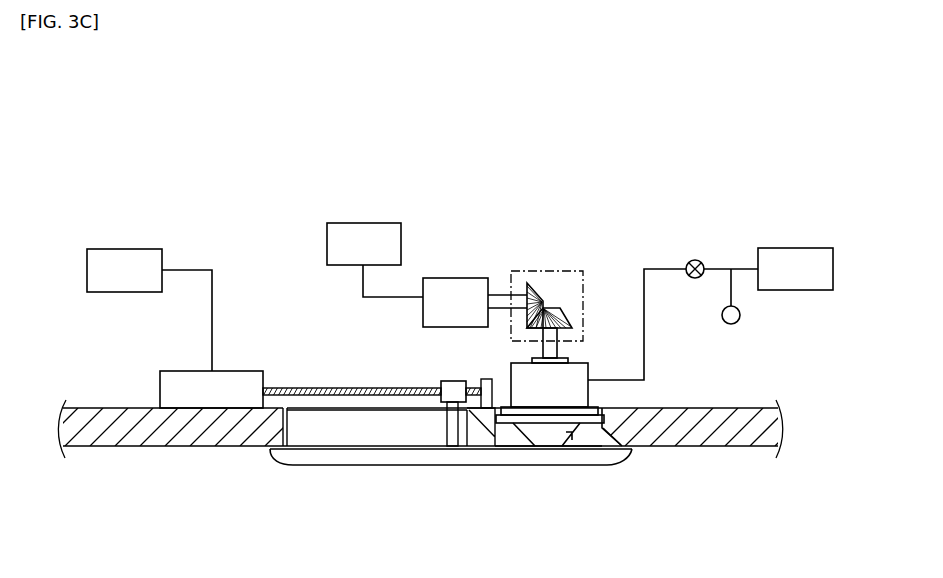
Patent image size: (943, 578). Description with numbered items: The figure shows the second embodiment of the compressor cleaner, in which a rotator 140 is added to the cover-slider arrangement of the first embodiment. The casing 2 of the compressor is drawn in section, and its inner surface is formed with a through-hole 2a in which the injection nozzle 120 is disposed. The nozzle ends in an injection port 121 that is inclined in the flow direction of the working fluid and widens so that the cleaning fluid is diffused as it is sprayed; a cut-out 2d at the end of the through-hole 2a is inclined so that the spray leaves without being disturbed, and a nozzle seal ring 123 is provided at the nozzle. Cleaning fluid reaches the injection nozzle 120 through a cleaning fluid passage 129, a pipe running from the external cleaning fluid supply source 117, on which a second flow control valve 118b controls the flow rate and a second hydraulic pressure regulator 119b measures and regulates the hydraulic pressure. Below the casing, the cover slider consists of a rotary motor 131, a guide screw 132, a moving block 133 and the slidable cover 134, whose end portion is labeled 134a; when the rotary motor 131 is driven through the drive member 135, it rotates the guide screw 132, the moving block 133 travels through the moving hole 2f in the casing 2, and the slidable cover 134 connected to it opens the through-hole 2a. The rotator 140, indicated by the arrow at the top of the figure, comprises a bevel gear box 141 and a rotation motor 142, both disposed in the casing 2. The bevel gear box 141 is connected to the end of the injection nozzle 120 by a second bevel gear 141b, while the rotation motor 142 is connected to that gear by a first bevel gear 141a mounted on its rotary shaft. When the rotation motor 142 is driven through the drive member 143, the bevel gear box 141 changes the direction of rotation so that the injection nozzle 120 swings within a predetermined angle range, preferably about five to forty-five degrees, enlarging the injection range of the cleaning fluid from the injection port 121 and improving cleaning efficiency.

The casing 2 is at (154, 432).
The moving hole 2f is at (290, 432).
The through-hole 2a is at (590, 433).
The cut-out 2d is at (606, 438).
The external cleaning fluid supply source 117 is at (797, 248).
The second flow control valve 118b is at (697, 260).
The second hydraulic pressure regulator 119b is at (740, 315).
The injection nozzle 120 is at (576, 372).
The injection port 121 is at (572, 437).
The nozzle seal ring 123 is at (505, 424).
The cleaning fluid passage 129 is at (663, 268).
The rotary motor 131 is at (240, 371).
The guide screw 132 is at (317, 388).
The moving block 133 is at (441, 383).
The slidable cover 134 is at (367, 458).
The tray end 134a is at (282, 458).
The drive member 135 is at (126, 249).
The rotator 140 is at (492, 212).
The bevel gear box 141 is at (545, 271).
The first bevel gear 141a is at (538, 293).
The second bevel gear 141b is at (565, 315).
The rotation motor 142 is at (455, 278).
The drive member 143 is at (363, 223).